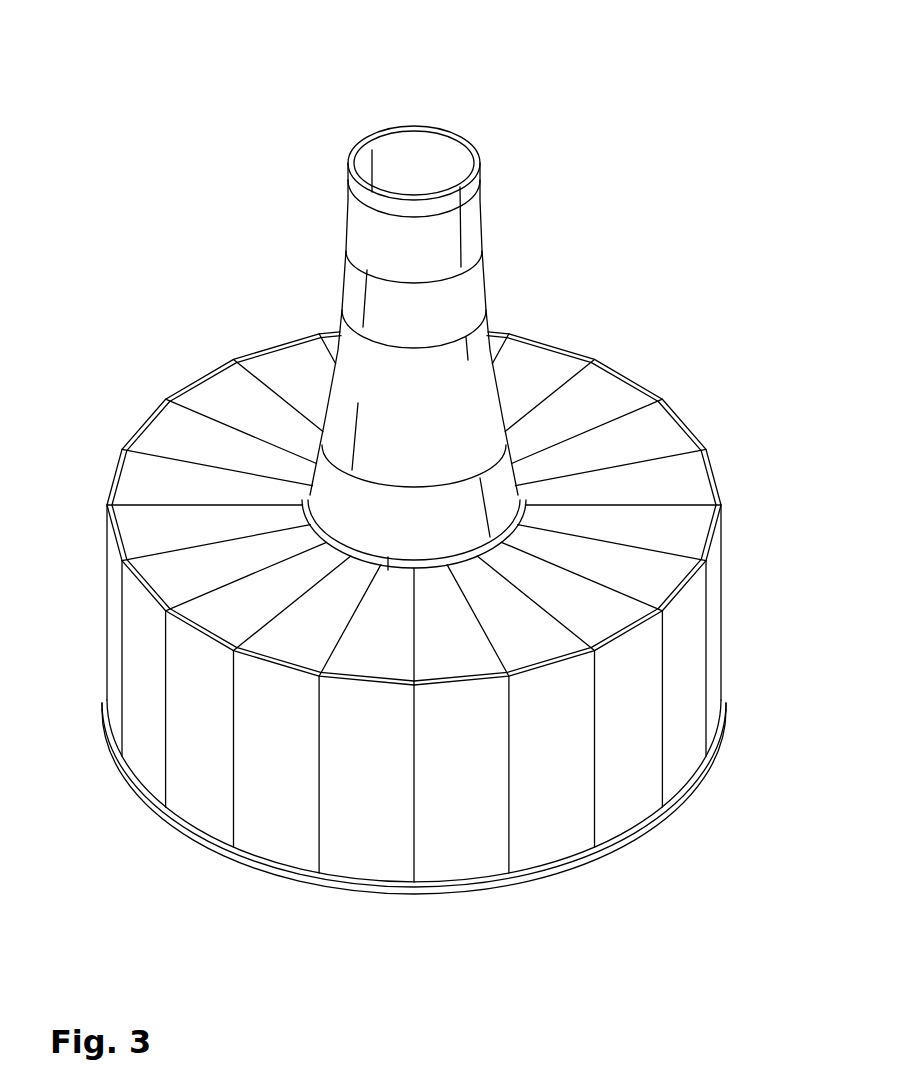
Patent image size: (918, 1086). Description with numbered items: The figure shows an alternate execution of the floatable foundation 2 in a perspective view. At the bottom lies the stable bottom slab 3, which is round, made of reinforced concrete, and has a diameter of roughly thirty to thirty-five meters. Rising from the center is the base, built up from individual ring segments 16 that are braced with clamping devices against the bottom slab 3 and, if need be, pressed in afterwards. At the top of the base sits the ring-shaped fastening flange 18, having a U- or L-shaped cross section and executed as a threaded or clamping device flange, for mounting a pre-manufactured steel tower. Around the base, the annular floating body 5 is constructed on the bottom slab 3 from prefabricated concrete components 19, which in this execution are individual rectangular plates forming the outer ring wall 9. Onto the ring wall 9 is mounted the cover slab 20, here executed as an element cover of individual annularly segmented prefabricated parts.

The floatable foundation 2 is at (537, 304).
The bottom slab 3 is at (617, 842).
The floating body 5 is at (697, 634).
The outer ring wall 9 is at (443, 833).
The ring segments 16 is at (472, 295).
The fastening flange 18 is at (457, 138).
The concrete components 19 is at (200, 788).
The cover slab 20 is at (590, 408).